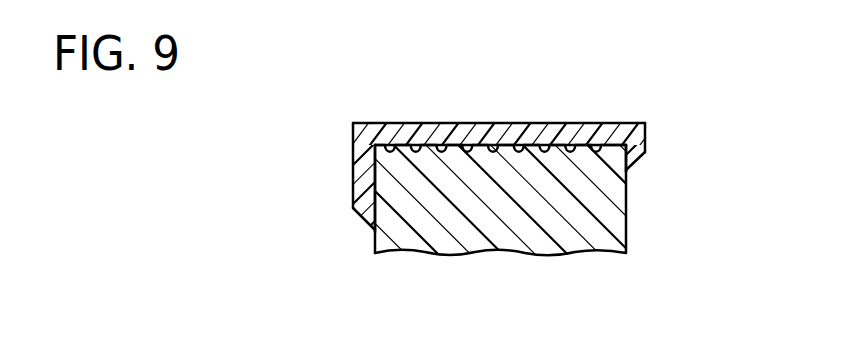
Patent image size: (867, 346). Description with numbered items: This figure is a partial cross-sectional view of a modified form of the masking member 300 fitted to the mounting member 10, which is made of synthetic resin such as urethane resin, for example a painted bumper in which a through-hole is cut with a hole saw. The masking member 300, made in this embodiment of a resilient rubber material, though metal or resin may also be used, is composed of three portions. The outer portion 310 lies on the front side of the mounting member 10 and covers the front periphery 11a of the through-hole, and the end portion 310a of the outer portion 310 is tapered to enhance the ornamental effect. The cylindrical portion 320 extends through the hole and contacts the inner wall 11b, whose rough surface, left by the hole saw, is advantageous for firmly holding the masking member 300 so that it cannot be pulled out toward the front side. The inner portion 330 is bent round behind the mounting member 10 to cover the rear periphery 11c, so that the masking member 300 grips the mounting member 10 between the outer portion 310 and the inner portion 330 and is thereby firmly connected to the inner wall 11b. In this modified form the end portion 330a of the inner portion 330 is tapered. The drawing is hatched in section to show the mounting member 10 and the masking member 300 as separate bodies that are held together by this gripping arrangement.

The masking member 300 is at (503, 157).
The outer portion 310 is at (322, 195).
The end portion of the outer portion 310a is at (363, 226).
The cylindrical portion 320 is at (503, 136).
The inner portion 330 is at (686, 131).
The end portion of the inner portion 330a is at (647, 163).
The mounting member 10 is at (496, 231).
The front periphery of the through-hole 11a is at (373, 200).
The inner wall of the through-hole 11b is at (505, 150).
The rear periphery of the through-hole 11c is at (623, 169).